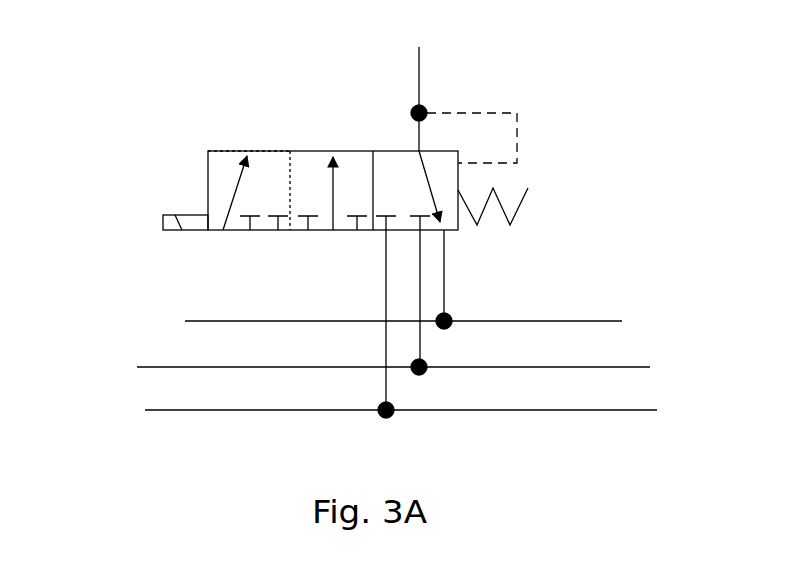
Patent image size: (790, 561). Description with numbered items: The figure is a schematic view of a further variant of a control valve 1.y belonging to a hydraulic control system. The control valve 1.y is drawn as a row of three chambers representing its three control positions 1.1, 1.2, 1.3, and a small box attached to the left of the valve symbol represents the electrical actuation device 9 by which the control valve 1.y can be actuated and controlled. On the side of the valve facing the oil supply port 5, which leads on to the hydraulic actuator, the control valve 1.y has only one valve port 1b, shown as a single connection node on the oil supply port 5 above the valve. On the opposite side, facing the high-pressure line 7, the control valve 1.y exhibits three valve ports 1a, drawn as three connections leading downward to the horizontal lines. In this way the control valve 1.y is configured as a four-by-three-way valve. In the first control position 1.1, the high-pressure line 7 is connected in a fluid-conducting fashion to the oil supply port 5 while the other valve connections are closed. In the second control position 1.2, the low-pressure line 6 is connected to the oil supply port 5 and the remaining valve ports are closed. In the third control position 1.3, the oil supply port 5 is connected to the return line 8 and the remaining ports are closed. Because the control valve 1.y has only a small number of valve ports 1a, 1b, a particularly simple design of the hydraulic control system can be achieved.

The control valve 1.y is at (197, 133).
The first control position 1.1 is at (248, 140).
The second control position 1.2 is at (328, 140).
The third control position 1.3 is at (392, 140).
The valve ports 1a is at (386, 231).
The valve port 1b is at (421, 128).
The oil supply port 5 is at (421, 57).
The low-pressure line 6 is at (160, 367).
The high-pressure line 7 is at (150, 410).
The return line 8 is at (185, 321).
The electrical actuation device 9 is at (185, 215).